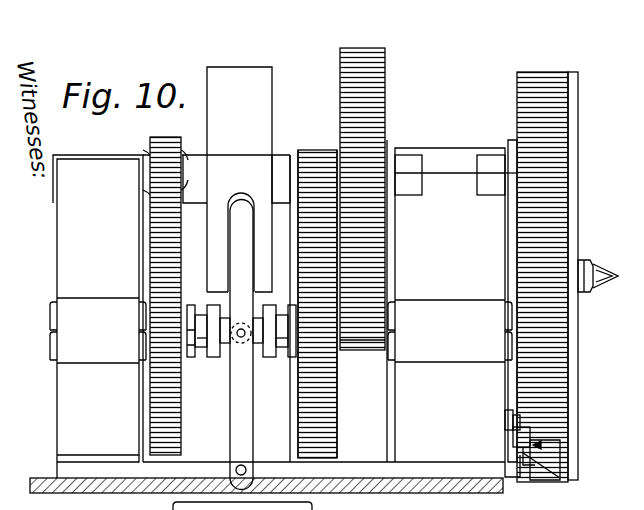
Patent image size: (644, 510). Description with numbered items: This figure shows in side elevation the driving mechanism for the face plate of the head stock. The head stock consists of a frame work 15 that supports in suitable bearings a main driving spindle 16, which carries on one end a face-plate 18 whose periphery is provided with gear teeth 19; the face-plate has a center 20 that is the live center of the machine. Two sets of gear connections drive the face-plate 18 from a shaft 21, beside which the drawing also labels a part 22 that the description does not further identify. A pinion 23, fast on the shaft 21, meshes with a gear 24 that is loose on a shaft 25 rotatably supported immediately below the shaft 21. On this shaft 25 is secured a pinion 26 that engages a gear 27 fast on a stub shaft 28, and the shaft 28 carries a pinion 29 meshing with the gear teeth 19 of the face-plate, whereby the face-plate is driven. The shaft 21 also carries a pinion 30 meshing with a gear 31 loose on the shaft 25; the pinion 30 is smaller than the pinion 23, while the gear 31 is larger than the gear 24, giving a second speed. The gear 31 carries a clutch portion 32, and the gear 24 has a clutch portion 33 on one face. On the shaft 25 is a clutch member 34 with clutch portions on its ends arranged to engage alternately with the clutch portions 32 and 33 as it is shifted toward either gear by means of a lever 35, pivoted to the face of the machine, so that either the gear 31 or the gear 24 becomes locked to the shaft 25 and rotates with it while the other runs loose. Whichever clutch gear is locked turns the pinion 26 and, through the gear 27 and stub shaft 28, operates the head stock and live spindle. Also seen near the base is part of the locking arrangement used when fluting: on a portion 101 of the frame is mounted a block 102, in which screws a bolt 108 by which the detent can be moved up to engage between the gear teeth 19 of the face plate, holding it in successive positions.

The frame work 15 is at (62, 282).
The main driving spindle 16 is at (62, 462).
The face-plate 18 is at (573, 383).
The gear teeth 19 is at (567, 72).
The center 20 is at (602, 270).
The shaft 21 is at (280, 155).
The guide plate 22 is at (240, 72).
The pinion 23 is at (190, 122).
The gear 24 is at (157, 258).
The shaft 25 is at (203, 357).
The pinion 26 is at (365, 350).
The gear 27 is at (386, 85).
The stub shaft 28 is at (390, 155).
The pinion 29 is at (533, 158).
The pinion 30 is at (318, 150).
The gear 31 is at (300, 233).
The clutch portion 32 is at (290, 358).
The clutch portion 33 is at (190, 360).
The clutch member 34 is at (250, 310).
The lever 35 is at (243, 232).
The portion of the frame 101 is at (510, 477).
The block 102 is at (560, 482).
The bolt 108 is at (523, 450).